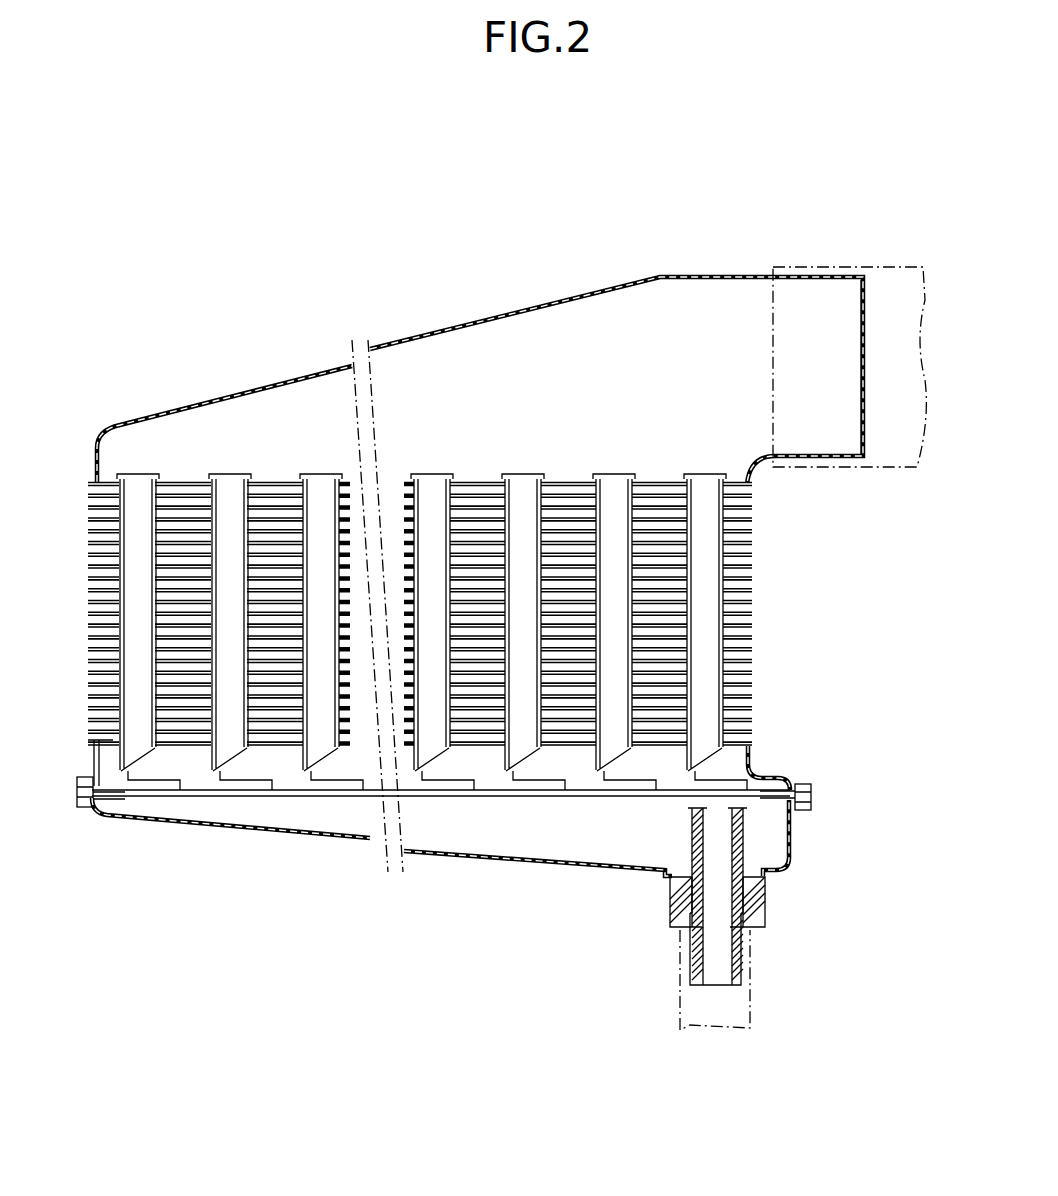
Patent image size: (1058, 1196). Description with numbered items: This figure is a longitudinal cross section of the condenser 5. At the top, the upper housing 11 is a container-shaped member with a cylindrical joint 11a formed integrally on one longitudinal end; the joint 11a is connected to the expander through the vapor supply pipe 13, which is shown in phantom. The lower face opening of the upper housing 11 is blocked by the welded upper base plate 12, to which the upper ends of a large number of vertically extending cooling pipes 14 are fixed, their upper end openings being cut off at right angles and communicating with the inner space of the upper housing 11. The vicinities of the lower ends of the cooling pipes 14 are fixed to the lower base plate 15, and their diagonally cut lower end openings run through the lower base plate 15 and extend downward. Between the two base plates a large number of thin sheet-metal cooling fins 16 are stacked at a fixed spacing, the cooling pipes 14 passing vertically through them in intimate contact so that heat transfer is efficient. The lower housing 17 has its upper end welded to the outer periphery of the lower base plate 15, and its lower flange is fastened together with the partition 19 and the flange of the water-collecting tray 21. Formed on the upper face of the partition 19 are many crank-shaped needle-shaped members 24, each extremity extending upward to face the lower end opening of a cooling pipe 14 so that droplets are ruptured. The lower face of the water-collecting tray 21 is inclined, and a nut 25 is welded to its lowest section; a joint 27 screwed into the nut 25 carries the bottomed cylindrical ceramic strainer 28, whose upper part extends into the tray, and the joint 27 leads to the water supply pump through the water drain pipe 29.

The condenser 5 is at (470, 262).
The upper housing 11 is at (531, 300).
The cylindrical joint 11a is at (812, 272).
The upper base plate 12 is at (485, 476).
The vapor supply pipe 13 is at (857, 265).
The cooling pipes 14 is at (233, 476).
The lower base plate 15 is at (481, 745).
The cooling fins 16 is at (752, 570).
The lower housing 17 is at (770, 765).
The partition 19 is at (552, 800).
The water-collecting tray 21 is at (543, 873).
The needle-shaped members 24 is at (228, 782).
The nut 25 is at (765, 893).
The joint 27 is at (690, 948).
The ceramic strainer 28 is at (692, 858).
The water drain pipe 29 is at (750, 1028).